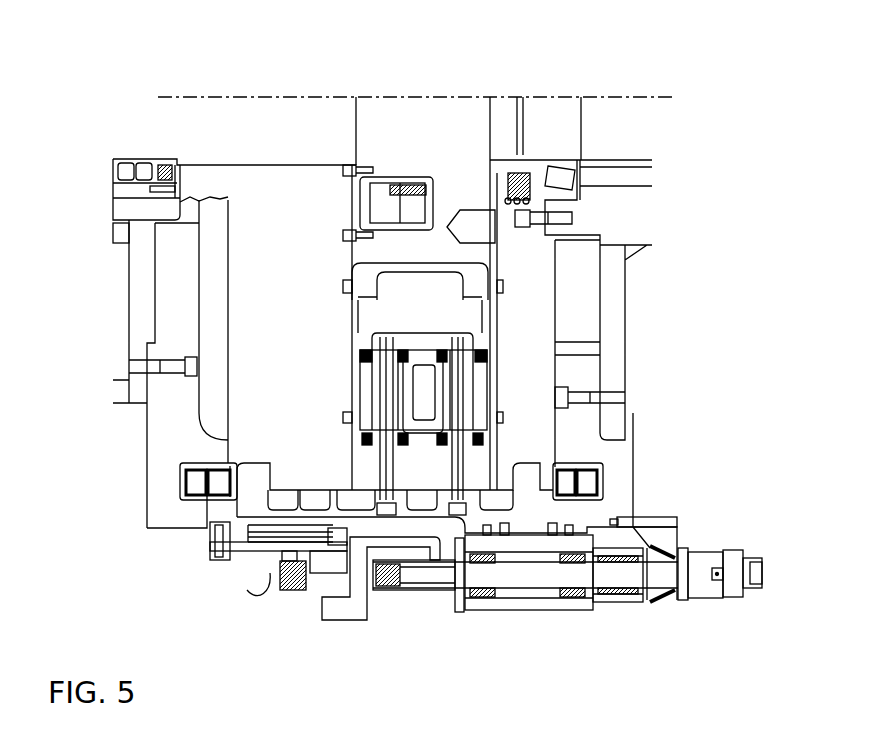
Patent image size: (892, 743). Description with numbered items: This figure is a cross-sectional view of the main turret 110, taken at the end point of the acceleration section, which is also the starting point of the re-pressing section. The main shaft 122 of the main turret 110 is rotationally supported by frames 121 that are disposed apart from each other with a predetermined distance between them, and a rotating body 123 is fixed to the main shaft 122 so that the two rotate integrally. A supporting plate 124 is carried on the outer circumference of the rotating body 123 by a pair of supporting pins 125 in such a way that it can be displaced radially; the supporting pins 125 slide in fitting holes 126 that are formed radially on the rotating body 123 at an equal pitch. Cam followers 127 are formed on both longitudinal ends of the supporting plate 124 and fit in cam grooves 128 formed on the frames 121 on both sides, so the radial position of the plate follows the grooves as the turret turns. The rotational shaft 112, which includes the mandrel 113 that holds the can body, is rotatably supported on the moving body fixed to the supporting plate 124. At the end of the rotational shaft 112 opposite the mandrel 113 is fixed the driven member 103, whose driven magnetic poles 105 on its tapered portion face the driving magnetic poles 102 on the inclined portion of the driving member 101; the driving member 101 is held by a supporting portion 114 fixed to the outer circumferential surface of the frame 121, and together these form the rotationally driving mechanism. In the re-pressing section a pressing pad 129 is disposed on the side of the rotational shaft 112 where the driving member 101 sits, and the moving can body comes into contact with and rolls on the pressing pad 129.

The main turret 110 is at (100, 82).
The main shaft 122 is at (305, 130).
The rotating body 123 is at (400, 258).
The frame 121 is at (142, 287).
The fitting hole 126 is at (440, 385).
The supporting pin 125 is at (458, 490).
The supporting plate 124 is at (358, 500).
The cam follower 127 is at (200, 500).
The cam groove 128 is at (178, 485).
The pressing pad 129 is at (368, 612).
The mandrel 113 is at (418, 580).
The rotational shaft 112 is at (543, 573).
The driving member 101 is at (781, 491).
The supporting portion 114 is at (663, 533).
The driving magnetic pole 102 is at (680, 547).
The driven member 103 is at (660, 603).
The driven magnetic pole 105 is at (650, 610).